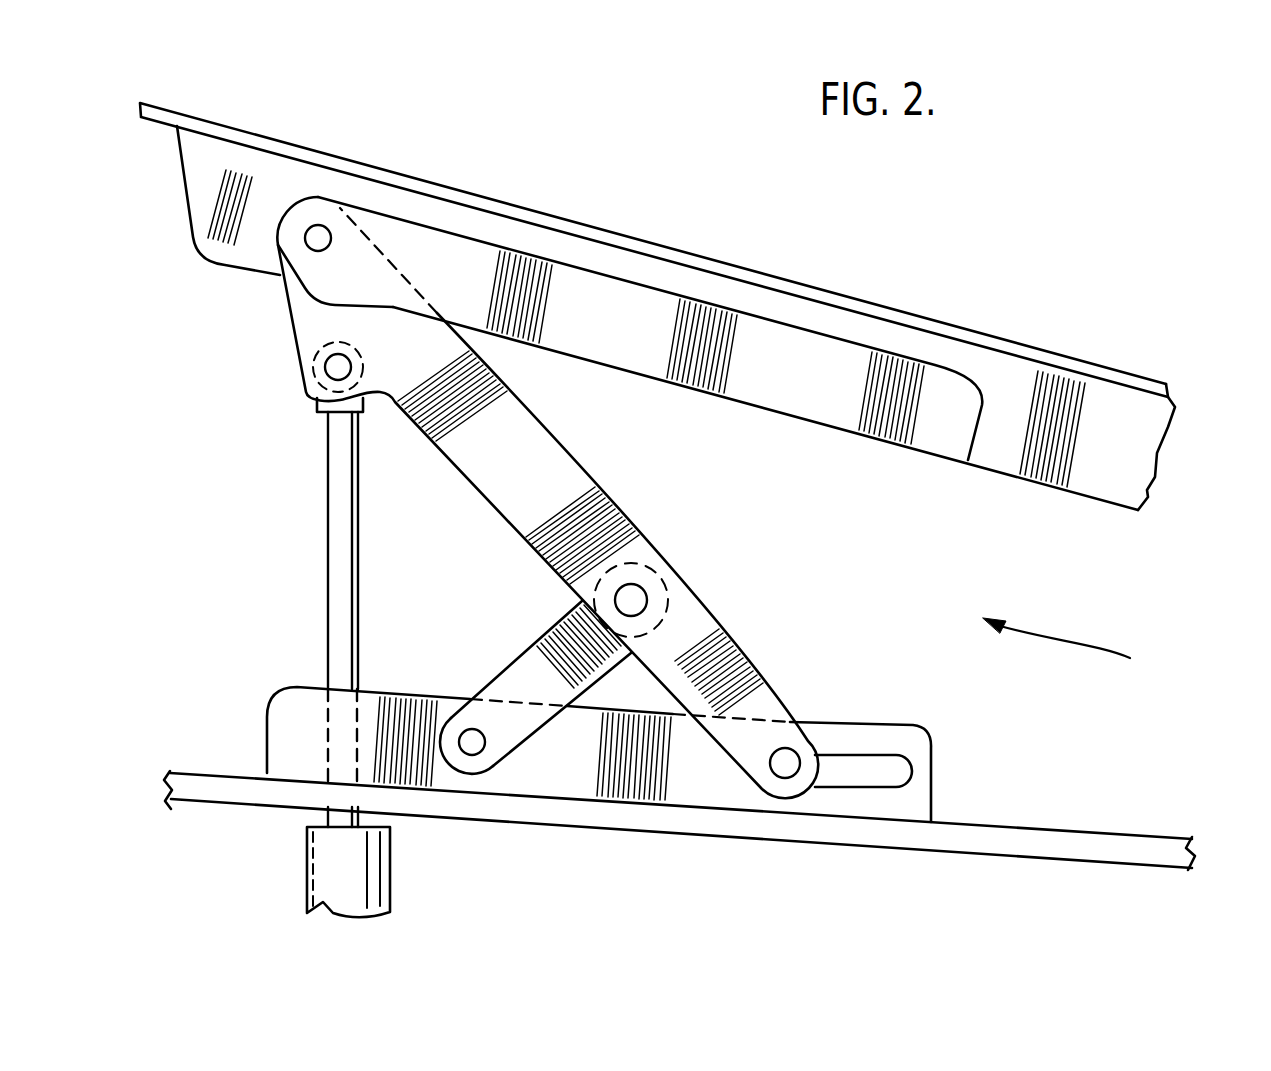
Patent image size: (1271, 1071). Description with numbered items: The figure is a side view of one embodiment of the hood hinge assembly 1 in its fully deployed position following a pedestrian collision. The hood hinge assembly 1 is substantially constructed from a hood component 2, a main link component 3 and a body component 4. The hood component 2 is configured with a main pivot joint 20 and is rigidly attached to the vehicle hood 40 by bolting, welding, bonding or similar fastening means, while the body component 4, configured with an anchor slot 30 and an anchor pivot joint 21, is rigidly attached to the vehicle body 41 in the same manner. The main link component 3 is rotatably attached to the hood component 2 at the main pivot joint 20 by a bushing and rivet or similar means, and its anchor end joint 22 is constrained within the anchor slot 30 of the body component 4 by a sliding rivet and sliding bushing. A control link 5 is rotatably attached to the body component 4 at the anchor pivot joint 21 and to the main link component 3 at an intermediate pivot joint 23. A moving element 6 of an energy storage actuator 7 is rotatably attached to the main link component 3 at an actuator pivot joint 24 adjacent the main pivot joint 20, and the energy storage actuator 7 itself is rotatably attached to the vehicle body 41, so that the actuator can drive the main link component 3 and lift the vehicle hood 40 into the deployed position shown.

The hood hinge assembly 1 is at (1068, 653).
The hood component 2 is at (567, 272).
The main link component 3 is at (578, 484).
The body component 4 is at (293, 703).
The control link 5 is at (531, 648).
The moving element 6 is at (328, 537).
The energy storage actuator 7 is at (317, 857).
The main pivot joint 20 is at (318, 225).
The anchor pivot joint 21 is at (472, 740).
The anchor end joint 22 is at (787, 756).
The intermediate pivot joint 23 is at (633, 590).
The actuator pivot joint 24 is at (338, 367).
The anchor slot 30 is at (883, 753).
The vehicle hood 40 is at (927, 318).
The vehicle body 41 is at (1013, 829).